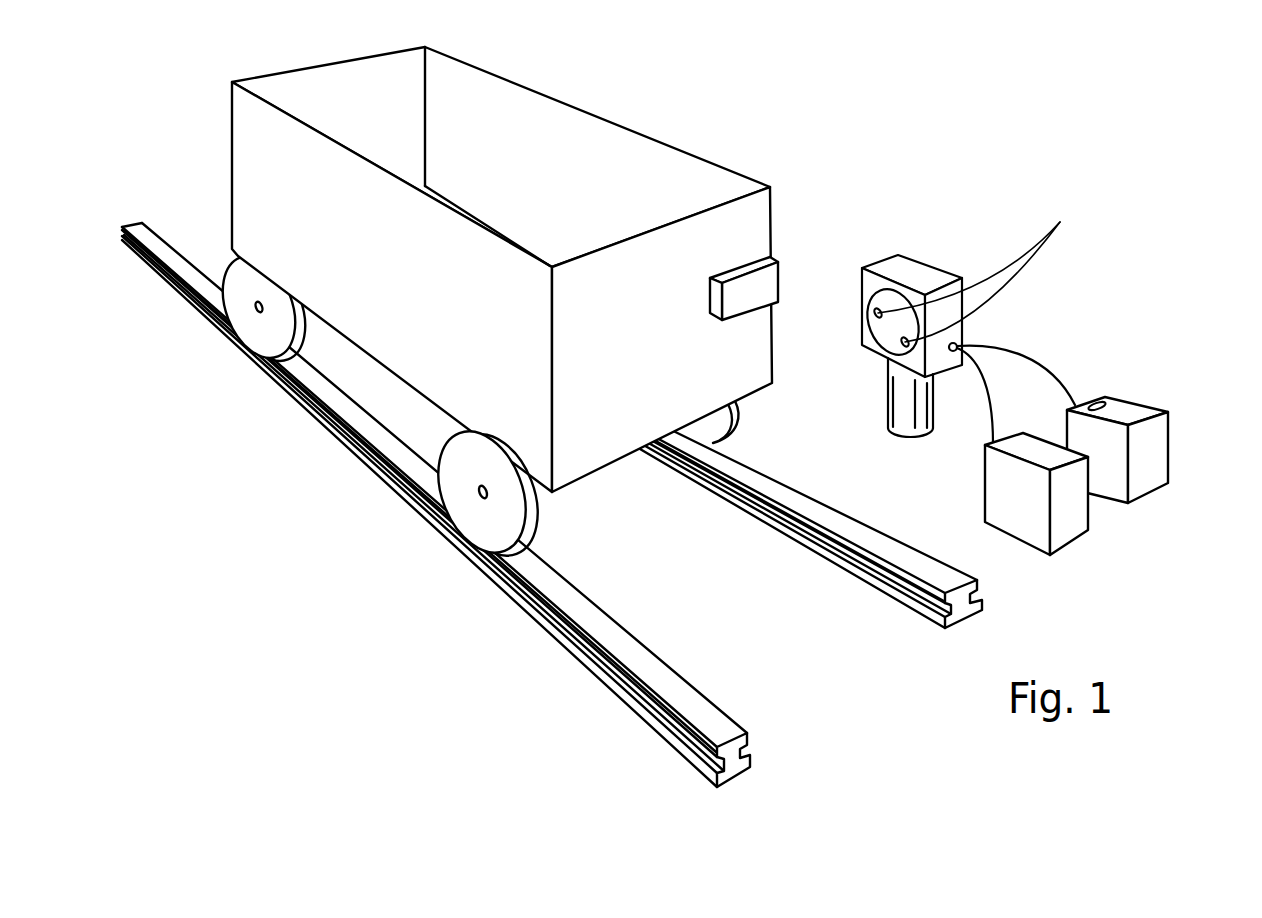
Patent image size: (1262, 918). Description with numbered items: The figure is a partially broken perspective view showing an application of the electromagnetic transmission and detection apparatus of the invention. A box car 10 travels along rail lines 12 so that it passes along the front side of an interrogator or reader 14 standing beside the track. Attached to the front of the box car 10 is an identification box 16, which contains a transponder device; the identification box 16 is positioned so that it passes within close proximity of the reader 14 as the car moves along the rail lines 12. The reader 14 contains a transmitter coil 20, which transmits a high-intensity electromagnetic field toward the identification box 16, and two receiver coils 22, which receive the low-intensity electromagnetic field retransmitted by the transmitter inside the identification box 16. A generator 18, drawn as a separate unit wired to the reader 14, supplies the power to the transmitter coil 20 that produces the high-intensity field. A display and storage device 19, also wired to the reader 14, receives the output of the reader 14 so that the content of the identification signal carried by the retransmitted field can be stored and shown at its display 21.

The box car 10 is at (462, 112).
The rail lines 12 is at (583, 610).
The interrogator or reader 14 is at (907, 277).
The identification box 16 is at (757, 288).
The generator 18 is at (1072, 508).
The display and storage device 19 is at (1162, 442).
The transmitter coil 20 is at (893, 330).
The display 21 is at (1107, 400).
The receiver coils 22 is at (988, 269).